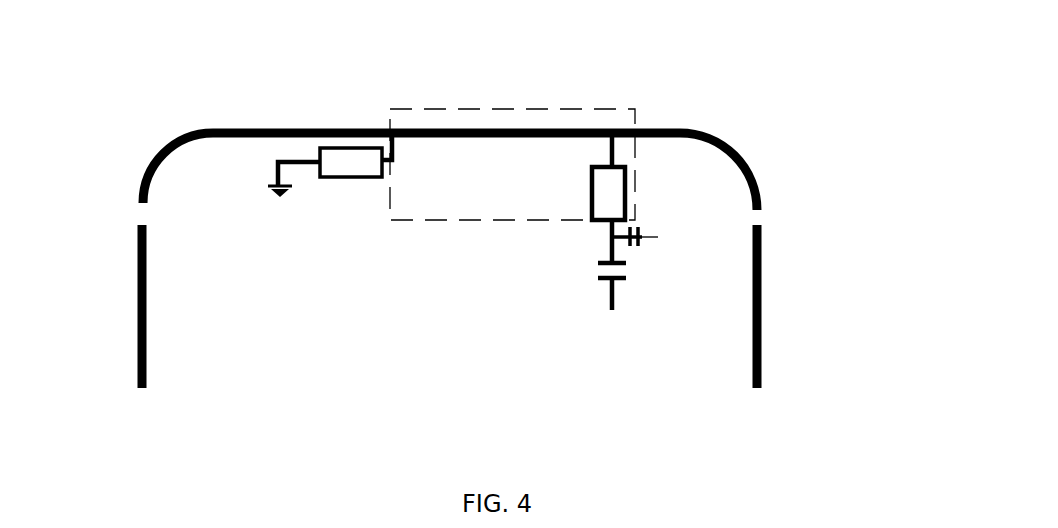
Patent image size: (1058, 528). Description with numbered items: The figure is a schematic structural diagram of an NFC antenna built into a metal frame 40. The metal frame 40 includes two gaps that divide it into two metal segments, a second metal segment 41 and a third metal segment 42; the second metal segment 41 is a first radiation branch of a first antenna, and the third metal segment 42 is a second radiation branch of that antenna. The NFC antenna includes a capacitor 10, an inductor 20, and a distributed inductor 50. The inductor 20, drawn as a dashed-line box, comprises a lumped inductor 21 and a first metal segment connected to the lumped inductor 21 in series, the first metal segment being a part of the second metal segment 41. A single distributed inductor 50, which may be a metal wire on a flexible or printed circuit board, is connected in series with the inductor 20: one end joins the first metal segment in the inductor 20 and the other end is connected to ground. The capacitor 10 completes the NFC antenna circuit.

The capacitor 10 is at (638, 247).
The inductor 20 is at (488, 207).
The lumped inductor 21 is at (613, 183).
The metal frame 40 is at (144, 142).
The second metal segment 41 is at (560, 130).
The third metal segment 42 is at (747, 300).
The distributed inductor 50 is at (360, 165).